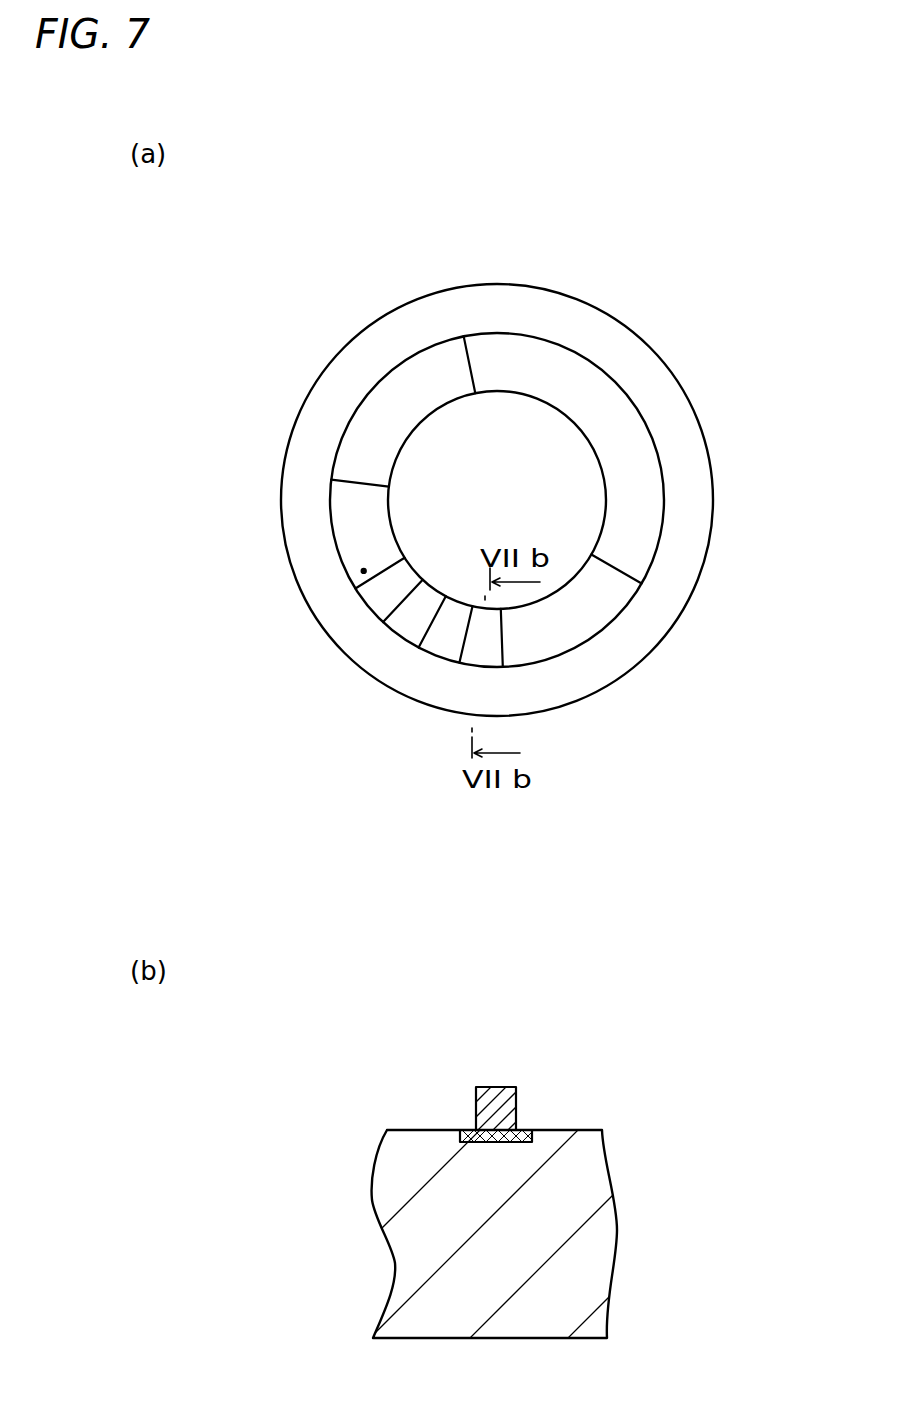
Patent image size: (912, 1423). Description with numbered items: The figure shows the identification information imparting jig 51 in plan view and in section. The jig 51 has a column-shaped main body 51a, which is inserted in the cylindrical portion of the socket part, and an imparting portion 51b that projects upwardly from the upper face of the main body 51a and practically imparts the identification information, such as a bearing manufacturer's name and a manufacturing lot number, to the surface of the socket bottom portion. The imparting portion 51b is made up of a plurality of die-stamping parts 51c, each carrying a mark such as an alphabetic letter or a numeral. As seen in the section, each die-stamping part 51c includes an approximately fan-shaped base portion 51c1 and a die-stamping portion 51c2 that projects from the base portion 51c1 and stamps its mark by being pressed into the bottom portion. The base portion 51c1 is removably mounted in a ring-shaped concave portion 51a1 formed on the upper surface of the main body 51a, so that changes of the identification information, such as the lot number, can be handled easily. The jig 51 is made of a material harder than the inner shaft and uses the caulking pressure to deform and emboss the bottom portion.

The identification information imparting jig 51 is at (673, 367).
The main body 51a is at (690, 465).
The ring-shaped concave portion 51a1 is at (578, 630).
The imparting portion 51b is at (604, 384).
The die-stamping part 51c is at (640, 554).
The base portion 51c1 is at (467, 1128).
The die-stamping portion 51c2 is at (518, 1126).